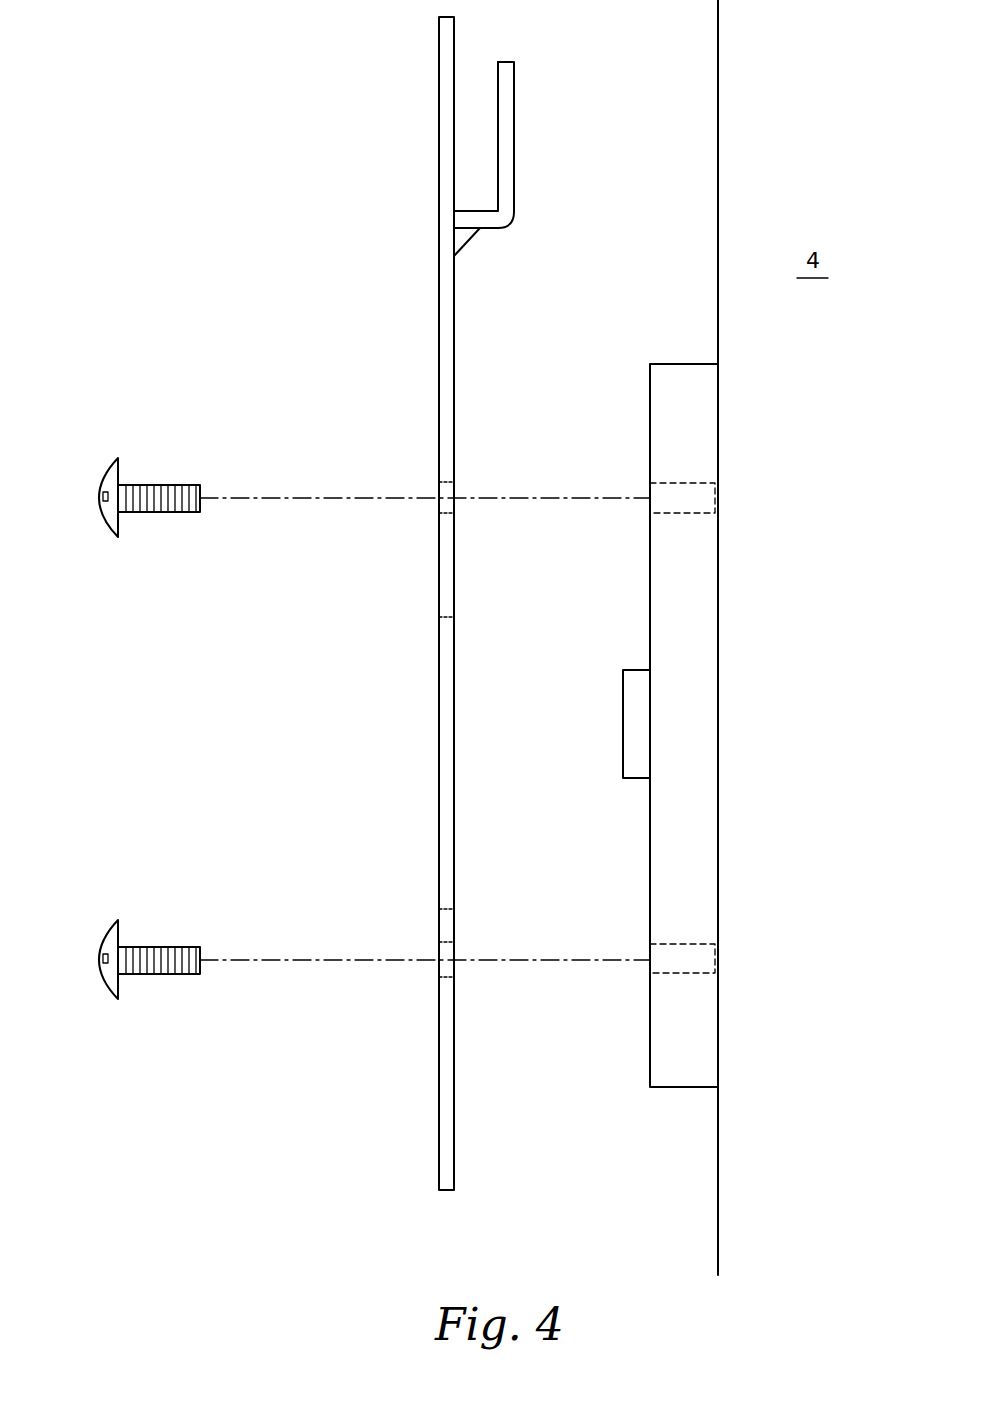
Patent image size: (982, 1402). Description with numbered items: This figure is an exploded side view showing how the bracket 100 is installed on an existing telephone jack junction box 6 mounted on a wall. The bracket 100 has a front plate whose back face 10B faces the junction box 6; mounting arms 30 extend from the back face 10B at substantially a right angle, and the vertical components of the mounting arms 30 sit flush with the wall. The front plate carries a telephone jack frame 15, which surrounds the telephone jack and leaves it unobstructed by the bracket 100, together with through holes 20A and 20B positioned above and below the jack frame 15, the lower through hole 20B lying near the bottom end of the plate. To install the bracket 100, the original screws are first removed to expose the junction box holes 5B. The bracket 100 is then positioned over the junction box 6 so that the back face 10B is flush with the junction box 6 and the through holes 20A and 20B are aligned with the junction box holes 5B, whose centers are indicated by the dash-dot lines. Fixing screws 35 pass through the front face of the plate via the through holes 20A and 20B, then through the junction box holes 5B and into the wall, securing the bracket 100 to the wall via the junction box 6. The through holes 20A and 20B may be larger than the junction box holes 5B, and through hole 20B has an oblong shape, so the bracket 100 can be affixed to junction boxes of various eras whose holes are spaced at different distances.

The bracket 100 is at (438, 178).
The mounting arms 30 is at (514, 163).
The junction box 6 is at (673, 364).
The through hole 20A is at (439, 490).
The through hole 20B is at (439, 965).
The junction box holes 5B is at (693, 483).
The fixing screws 35 is at (105, 520).
The jack frame 15 is at (438, 775).
The back face 10B is at (455, 1087).